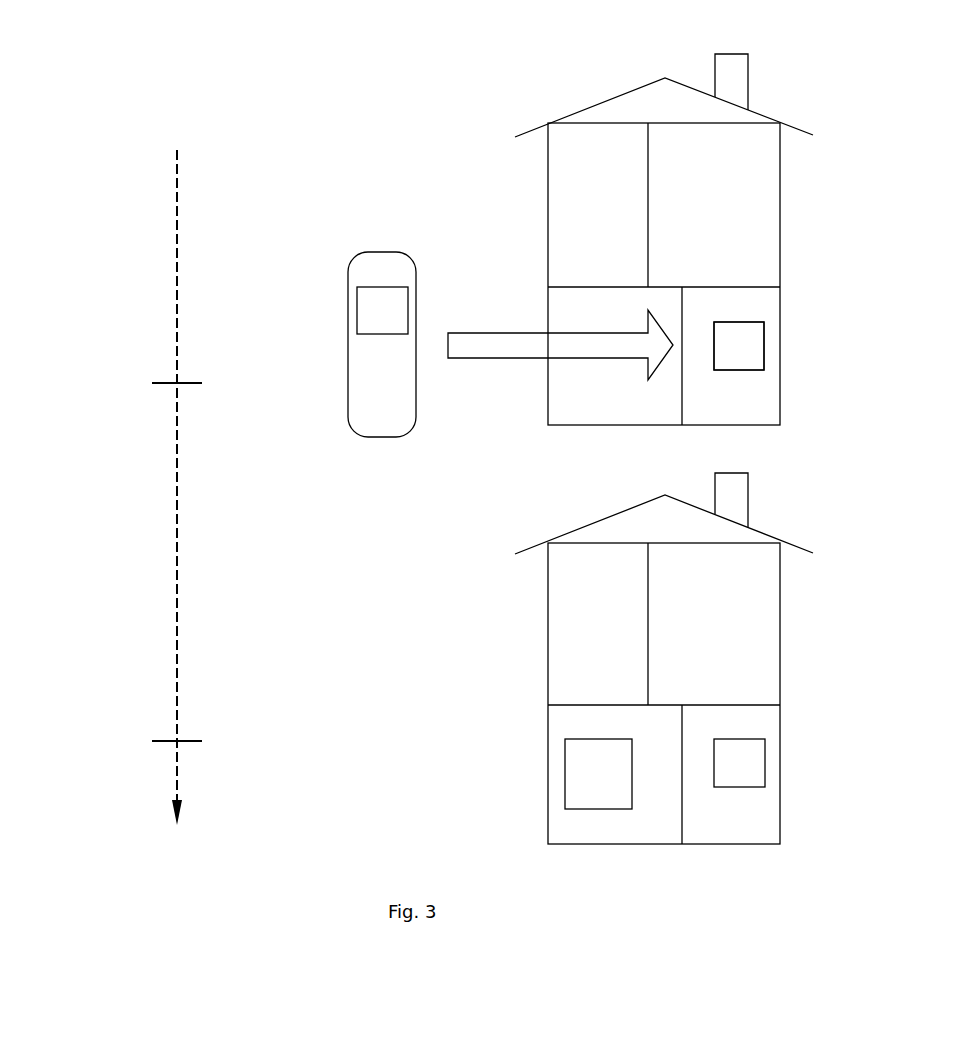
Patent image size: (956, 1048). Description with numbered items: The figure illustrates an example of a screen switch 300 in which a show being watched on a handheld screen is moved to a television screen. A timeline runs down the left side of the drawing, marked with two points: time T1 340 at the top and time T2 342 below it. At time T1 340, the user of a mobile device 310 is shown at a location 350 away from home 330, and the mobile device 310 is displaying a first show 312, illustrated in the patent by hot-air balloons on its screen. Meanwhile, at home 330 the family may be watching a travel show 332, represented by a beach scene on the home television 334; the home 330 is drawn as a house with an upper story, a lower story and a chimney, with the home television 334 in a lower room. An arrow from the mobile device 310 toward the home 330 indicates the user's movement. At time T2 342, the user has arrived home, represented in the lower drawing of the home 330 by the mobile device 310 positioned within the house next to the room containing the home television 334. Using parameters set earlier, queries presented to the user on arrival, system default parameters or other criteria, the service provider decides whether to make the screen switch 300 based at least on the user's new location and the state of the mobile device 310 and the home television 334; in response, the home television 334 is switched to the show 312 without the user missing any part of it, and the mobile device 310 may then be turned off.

The screen switch 300 is at (186, 109).
The mobile device 310 is at (350, 416).
The first show 312 is at (400, 310).
The home 330 is at (565, 112).
The travel show 332 is at (764, 356).
The home television 334 is at (772, 343).
The time T1 340 is at (160, 383).
The time T2 342 is at (160, 741).
The location 350 is at (373, 242).